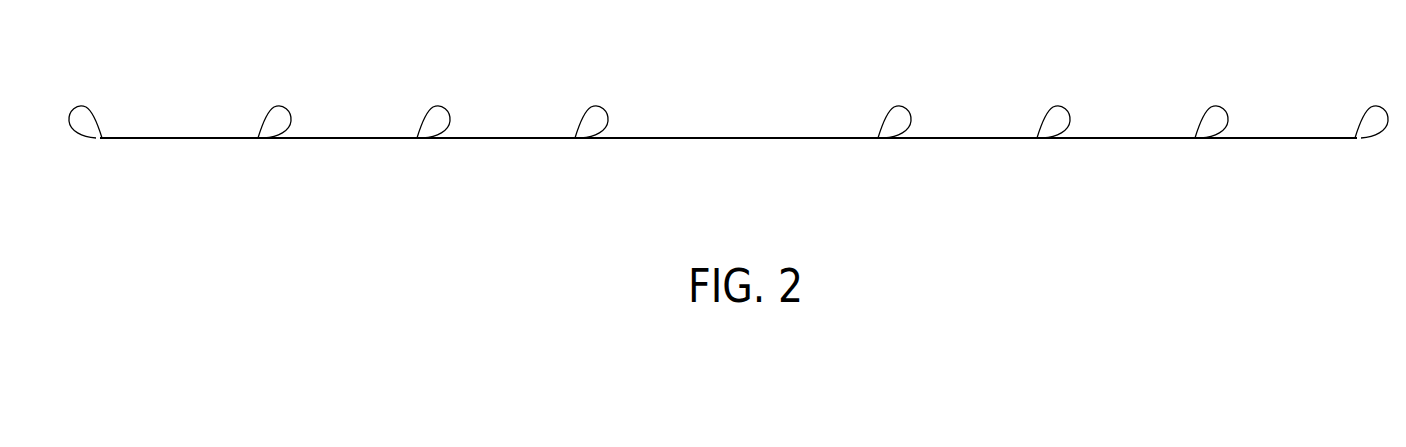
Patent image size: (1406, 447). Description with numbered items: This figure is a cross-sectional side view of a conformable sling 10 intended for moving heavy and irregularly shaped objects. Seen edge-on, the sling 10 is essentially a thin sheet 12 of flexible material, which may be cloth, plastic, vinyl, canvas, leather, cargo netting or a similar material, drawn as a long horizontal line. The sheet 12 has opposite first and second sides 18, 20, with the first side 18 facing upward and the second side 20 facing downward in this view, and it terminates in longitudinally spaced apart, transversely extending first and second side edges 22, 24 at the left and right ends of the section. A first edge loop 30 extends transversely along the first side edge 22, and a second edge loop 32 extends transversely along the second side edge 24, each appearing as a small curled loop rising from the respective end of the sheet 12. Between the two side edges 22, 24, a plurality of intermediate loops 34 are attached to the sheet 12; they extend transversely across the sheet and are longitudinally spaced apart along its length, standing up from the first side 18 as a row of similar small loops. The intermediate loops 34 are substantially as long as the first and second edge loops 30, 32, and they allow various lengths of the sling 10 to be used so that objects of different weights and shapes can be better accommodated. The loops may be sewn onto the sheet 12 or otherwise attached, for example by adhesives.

The conformable sling 10 is at (823, 175).
The sheet 12 is at (1127, 140).
The first side 18 is at (509, 137).
The second side 20 is at (344, 140).
The first side edge 22 is at (100, 140).
The second side edge 24 is at (1357, 140).
The first edge loop 30 is at (85, 107).
The second edge loop 32 is at (1375, 107).
The intermediate loops 34 is at (276, 107).